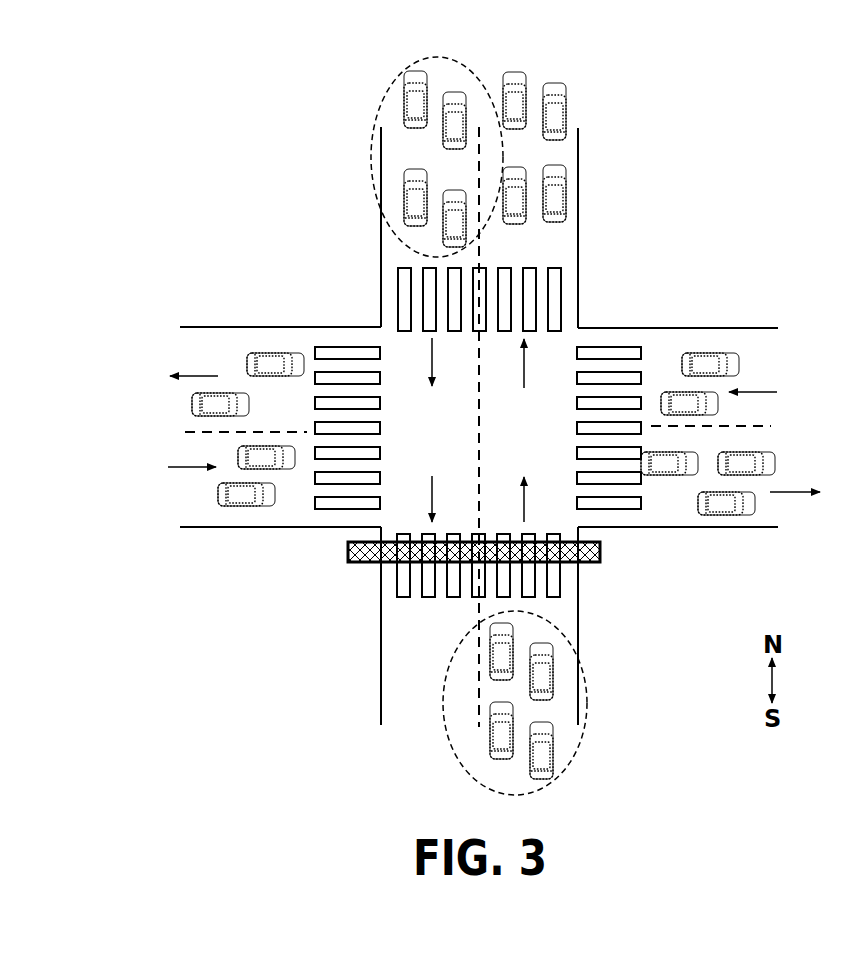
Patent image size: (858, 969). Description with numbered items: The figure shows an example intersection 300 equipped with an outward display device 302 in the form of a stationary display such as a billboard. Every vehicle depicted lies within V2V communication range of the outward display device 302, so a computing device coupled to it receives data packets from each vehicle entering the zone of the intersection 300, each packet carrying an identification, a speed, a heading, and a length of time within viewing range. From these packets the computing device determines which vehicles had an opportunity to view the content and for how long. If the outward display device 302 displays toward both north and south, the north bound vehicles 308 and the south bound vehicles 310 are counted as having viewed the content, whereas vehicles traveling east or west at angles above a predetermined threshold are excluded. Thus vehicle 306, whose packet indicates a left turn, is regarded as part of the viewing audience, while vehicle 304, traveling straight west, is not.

The intersection 300 is at (128, 54).
The outward display device 302 is at (362, 562).
The vehicle 304 is at (700, 355).
The vehicle 306 is at (675, 392).
The north bound vehicles 308 is at (587, 695).
The south bound vehicles 310 is at (372, 160).